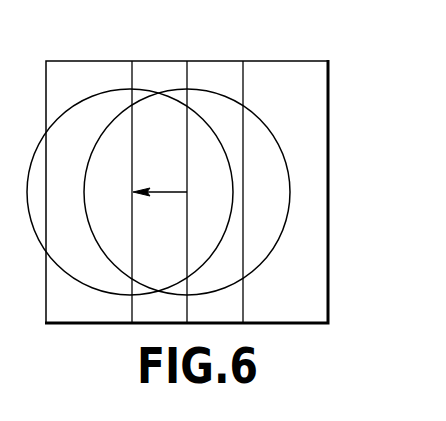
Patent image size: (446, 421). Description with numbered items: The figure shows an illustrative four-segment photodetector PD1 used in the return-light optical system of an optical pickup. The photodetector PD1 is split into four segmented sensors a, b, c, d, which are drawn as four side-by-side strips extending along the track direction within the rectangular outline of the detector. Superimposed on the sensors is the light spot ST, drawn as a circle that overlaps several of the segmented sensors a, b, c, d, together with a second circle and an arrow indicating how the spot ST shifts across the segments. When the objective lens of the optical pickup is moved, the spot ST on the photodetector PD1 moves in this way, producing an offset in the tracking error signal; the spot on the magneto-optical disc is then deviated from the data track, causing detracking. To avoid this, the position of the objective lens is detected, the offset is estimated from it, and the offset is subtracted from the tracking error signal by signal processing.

The photodetector PD1 is at (186, 164).
The spot ST is at (220, 238).
The segmented sensor a is at (92, 78).
The segmented sensor b is at (158, 78).
The segmented sensor c is at (212, 78).
The segmented sensor d is at (285, 78).